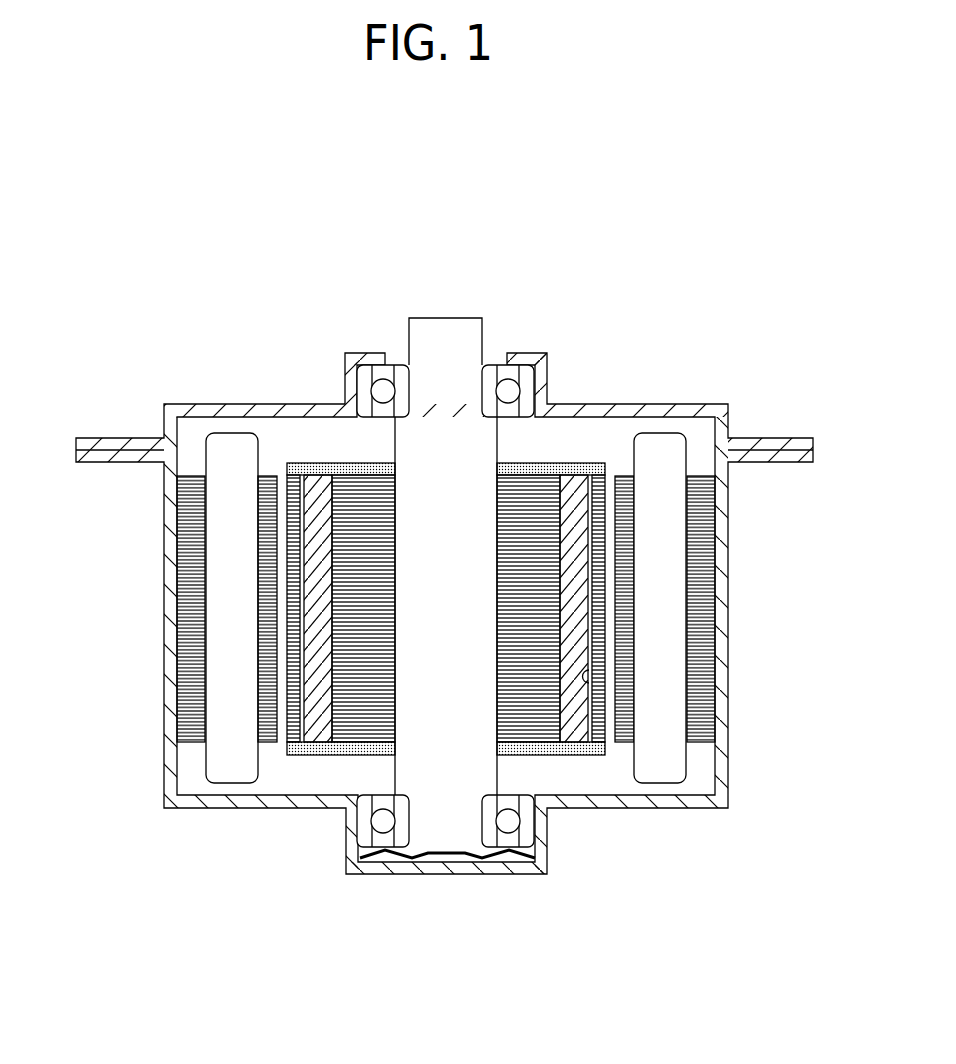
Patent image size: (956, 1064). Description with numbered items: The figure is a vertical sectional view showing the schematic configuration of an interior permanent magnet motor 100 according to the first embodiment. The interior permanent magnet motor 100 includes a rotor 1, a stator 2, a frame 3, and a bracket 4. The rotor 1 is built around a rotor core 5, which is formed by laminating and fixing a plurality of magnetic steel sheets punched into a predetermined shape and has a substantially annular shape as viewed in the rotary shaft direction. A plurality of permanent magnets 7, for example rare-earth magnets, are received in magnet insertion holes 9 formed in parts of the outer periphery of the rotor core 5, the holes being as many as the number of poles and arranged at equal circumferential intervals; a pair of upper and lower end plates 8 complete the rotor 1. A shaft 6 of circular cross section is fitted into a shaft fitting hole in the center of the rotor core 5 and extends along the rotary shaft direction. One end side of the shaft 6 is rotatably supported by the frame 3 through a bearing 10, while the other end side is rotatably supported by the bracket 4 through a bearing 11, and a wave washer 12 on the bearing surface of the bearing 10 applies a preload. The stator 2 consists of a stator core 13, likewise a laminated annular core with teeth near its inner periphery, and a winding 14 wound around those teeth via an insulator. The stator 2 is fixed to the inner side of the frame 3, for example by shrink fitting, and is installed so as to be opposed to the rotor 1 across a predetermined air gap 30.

The interior permanent magnet motor 100 is at (135, 252).
The rotor 1 is at (557, 609).
The stator 2 is at (379, 608).
The frame 3 is at (722, 782).
The bracket 4 is at (713, 409).
The rotor core 5 is at (597, 543).
The shaft 6 is at (555, 612).
The permanent magnets 7 is at (578, 638).
The end plates 8 is at (640, 709).
The magnet insertion holes 9 is at (588, 677).
The bearing 10 is at (527, 835).
The bearing 11 is at (528, 391).
The wave washer 12 is at (535, 850).
The stator core 13 is at (185, 570).
The winding 14 is at (232, 617).
The air gap 30 is at (280, 716).